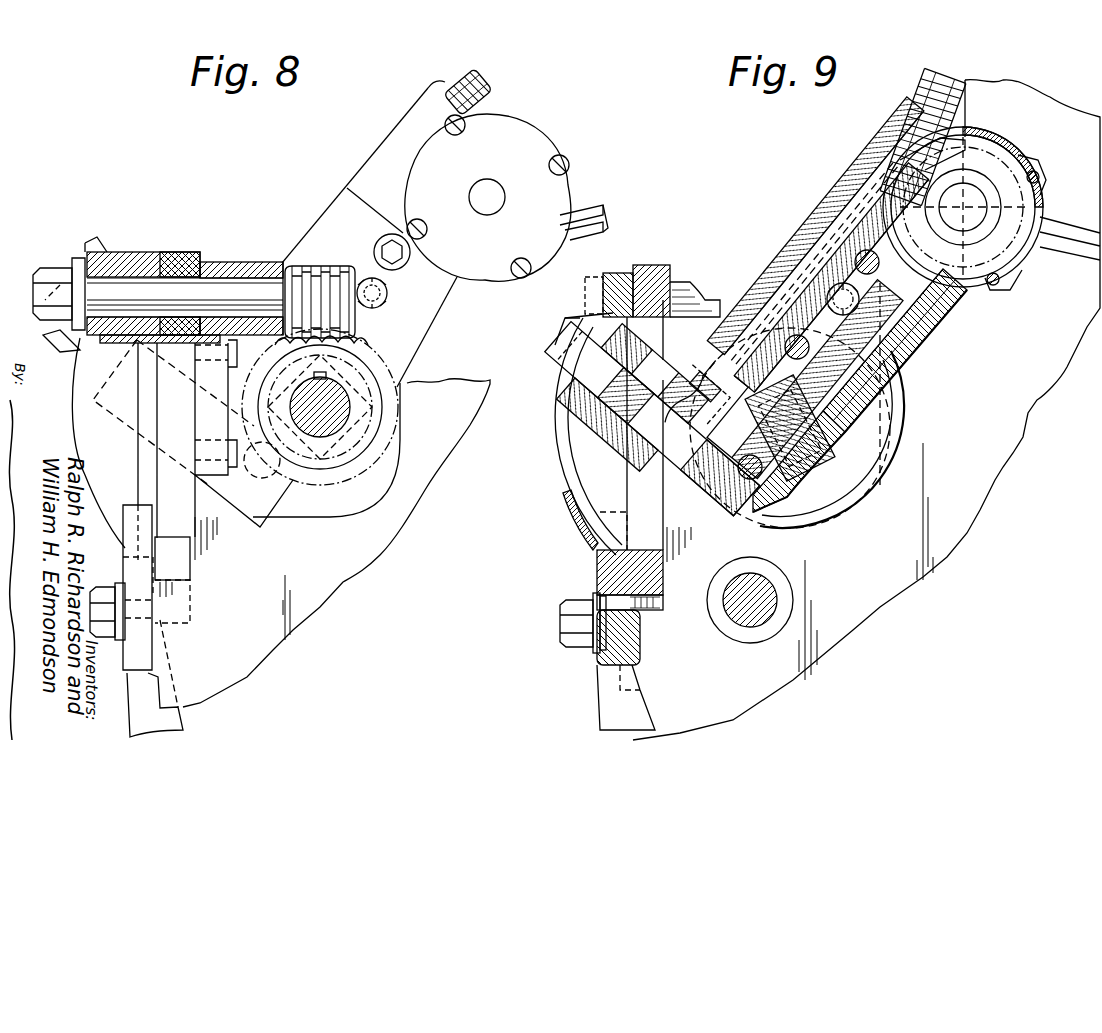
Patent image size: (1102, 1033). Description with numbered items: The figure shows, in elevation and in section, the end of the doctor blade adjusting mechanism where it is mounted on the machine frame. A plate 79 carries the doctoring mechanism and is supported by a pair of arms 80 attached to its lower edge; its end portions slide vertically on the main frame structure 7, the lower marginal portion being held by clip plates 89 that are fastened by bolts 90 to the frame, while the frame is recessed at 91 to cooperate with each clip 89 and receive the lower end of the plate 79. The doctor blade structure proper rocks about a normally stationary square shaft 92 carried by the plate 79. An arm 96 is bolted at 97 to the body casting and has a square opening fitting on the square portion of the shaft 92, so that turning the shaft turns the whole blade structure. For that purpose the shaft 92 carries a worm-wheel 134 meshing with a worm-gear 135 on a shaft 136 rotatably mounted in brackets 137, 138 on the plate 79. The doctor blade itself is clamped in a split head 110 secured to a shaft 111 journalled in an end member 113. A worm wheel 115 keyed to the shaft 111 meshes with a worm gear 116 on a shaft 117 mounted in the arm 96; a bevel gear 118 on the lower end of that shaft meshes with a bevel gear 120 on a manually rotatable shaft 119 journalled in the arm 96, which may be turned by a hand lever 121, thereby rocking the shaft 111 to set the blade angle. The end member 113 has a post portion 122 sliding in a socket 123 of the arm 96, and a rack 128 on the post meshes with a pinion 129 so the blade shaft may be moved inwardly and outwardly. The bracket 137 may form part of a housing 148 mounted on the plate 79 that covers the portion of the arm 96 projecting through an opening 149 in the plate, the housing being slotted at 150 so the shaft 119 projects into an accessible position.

In FIG. 8, the main frame structure 7 is at (315, 612).
In FIG. 9, the main frame structure 7 is at (983, 478).
In FIG. 8, the plate 79 is at (160, 475).
In FIG. 9, the plate 79 is at (663, 570).
In FIG. 9, the arms 80 is at (648, 706).
In FIG. 8, the clip plates 89 is at (137, 520).
In FIG. 9, the clip plates 89 is at (590, 543).
In FIG. 8, the bolts 90 is at (105, 608).
In FIG. 9, the bolts 90 is at (573, 617).
In FIG. 8, the recess 91 is at (193, 562).
In FIG. 8, the shaft 92 is at (335, 407).
In FIG. 9, the shaft 92 is at (873, 480).
In FIG. 8, the arm 96 is at (425, 362).
In FIG. 9, the arm 96 is at (777, 255).
In FIG. 8, the bolts 97 is at (408, 262).
In FIG. 9, the bolts 97 is at (857, 255).
In FIG. 8, the split head 110 is at (597, 212).
In FIG. 9, the split head 110 is at (1065, 262).
In FIG. 8, the shaft 111 is at (483, 192).
In FIG. 9, the shaft 111 is at (982, 207).
In FIG. 9, the end member 113 is at (1012, 163).
In FIG. 9, the worm wheel 115 is at (955, 150).
In FIG. 8, the worm gear 116 is at (452, 80).
In FIG. 9, the worm gear 116 is at (877, 137).
In FIG. 9, the shaft 117 is at (848, 203).
In FIG. 9, the bevel gear 118 is at (712, 420).
In FIG. 8, the manually rotatable shaft 119 is at (72, 340).
In FIG. 9, the manually rotatable shaft 119 is at (556, 330).
In FIG. 9, the bevel gear 120 is at (607, 440).
In FIG. 8, the hand lever 121 is at (84, 250).
In FIG. 9, the post portion 122 is at (915, 310).
In FIG. 9, the socket 123 is at (880, 340).
In FIG. 9, the rack 128 is at (885, 402).
In FIG. 8, the pinion 129 is at (387, 290).
In FIG. 9, the pinion 129 is at (820, 250).
In FIG. 8, the worm-wheel 134 is at (352, 345).
In FIG. 8, the worm-gear 135 is at (312, 268).
In FIG. 8, the shaft 136 is at (245, 280).
In FIG. 8, the bracket 137 is at (120, 262).
In FIG. 8, the bracket 138 is at (207, 262).
In FIG. 8, the housing 148 is at (80, 406).
In FIG. 9, the housing 148 is at (565, 505).
In FIG. 9, the opening 149 is at (665, 310).
In FIG. 9, the slot 150 is at (553, 437).